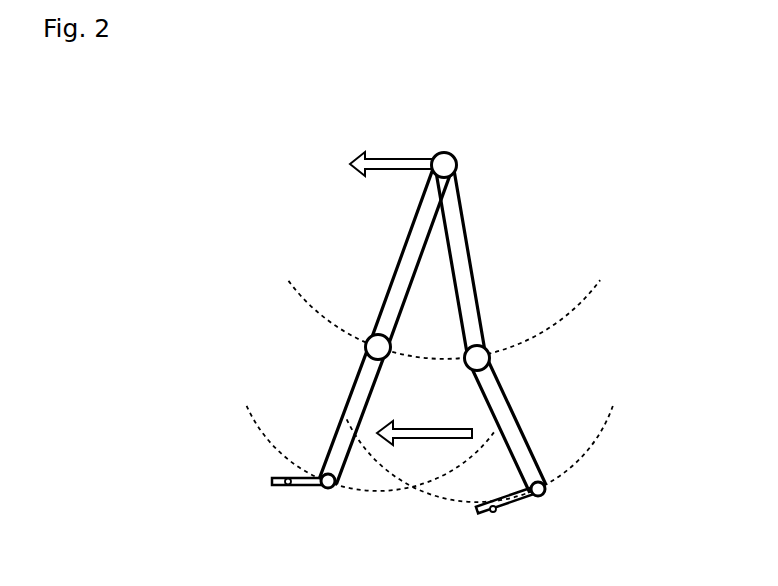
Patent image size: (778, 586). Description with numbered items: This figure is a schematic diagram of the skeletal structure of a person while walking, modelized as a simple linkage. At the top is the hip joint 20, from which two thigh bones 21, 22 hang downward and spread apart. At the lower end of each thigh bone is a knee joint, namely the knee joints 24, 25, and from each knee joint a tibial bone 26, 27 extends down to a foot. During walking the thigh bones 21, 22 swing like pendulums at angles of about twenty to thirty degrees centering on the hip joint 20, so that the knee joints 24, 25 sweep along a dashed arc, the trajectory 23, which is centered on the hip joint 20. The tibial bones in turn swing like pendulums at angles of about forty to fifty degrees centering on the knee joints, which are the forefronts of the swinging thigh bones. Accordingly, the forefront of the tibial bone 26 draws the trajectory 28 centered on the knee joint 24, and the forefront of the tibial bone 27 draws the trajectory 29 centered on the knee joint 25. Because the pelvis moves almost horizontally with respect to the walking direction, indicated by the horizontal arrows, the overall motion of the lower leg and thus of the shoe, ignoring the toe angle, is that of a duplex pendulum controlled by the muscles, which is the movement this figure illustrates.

The hip joint 20 is at (450, 163).
The thigh bone 21 is at (462, 262).
The thigh bone 22 is at (408, 256).
The trajectory 23 is at (596, 291).
The knee joint 24 is at (488, 355).
The knee joint 25 is at (376, 348).
The tibial bone 26 is at (520, 424).
The tibial bone 27 is at (350, 412).
The trajectory 28 is at (572, 468).
The trajectory 29 is at (272, 444).